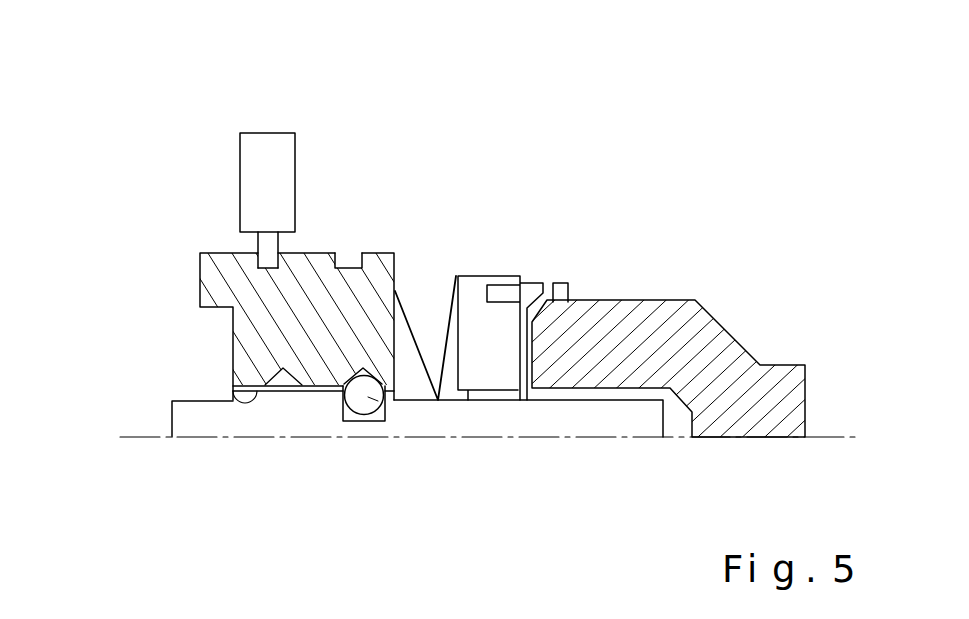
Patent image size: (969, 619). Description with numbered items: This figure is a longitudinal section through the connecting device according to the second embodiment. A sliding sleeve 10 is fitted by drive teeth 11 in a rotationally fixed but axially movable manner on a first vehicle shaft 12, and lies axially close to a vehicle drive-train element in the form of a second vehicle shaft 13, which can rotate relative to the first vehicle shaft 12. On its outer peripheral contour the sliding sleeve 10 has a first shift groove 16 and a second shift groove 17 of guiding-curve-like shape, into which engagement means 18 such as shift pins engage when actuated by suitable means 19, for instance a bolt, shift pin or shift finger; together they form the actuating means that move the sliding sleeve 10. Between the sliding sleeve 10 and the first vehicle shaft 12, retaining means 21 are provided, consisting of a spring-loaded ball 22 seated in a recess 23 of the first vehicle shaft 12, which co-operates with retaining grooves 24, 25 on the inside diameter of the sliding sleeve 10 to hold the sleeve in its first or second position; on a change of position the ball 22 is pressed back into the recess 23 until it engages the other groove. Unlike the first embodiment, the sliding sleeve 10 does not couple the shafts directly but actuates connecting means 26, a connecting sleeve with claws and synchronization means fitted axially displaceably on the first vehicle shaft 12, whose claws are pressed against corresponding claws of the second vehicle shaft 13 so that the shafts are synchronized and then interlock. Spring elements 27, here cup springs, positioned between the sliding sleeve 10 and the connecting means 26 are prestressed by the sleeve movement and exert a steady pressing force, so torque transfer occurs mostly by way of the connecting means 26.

The sliding sleeve 10 is at (230, 292).
The drive teeth 11 is at (233, 394).
The first vehicle shaft 12 is at (183, 415).
The second vehicle shaft 13 is at (782, 380).
The first shift groove 16 is at (260, 267).
The second shift groove 17 is at (350, 253).
The engagement means 18 is at (243, 128).
The actuating means 19 is at (257, 243).
The retaining means 21 is at (361, 420).
The spring-loaded ball 22 is at (372, 397).
The recess 23 is at (373, 422).
The retaining groove 24 is at (278, 368).
The retaining groove 25 is at (340, 368).
The connecting means 26 is at (522, 244).
The spring elements 27 is at (413, 325).